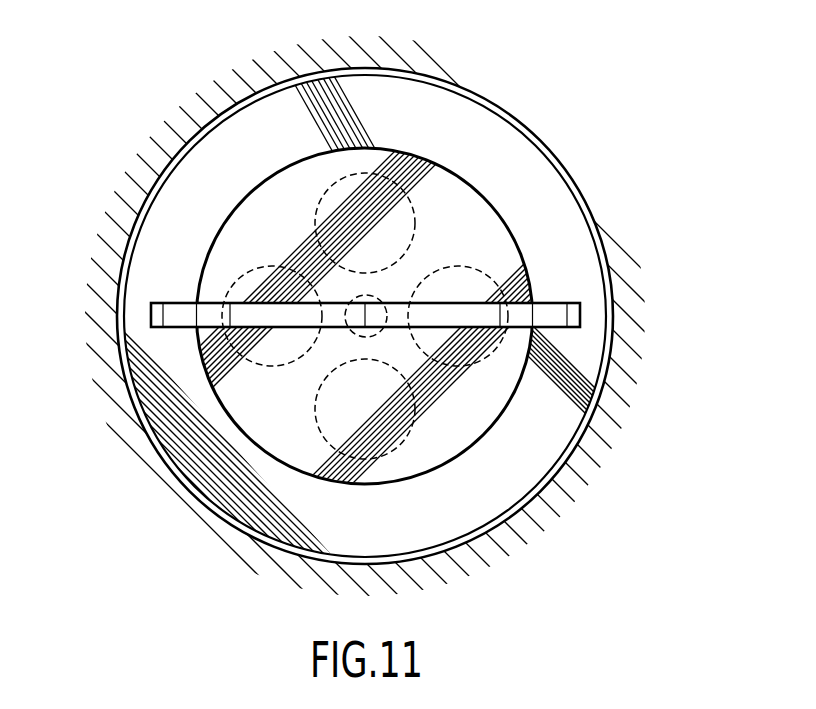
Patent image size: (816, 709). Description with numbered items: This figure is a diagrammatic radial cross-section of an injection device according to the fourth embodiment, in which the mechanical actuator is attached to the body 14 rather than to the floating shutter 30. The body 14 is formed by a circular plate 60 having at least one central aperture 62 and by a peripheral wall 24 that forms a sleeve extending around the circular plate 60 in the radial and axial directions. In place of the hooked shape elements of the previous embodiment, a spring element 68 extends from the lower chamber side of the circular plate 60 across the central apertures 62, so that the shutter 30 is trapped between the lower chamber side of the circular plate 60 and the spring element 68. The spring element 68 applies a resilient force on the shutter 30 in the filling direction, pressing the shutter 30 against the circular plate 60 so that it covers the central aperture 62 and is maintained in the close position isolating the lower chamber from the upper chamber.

The body 14 is at (183, 207).
The circular plate 60 is at (458, 127).
The shutter 30 is at (463, 217).
The peripheral wall 24 is at (608, 321).
The central aperture 62 is at (337, 194).
The spring element 68 is at (404, 321).